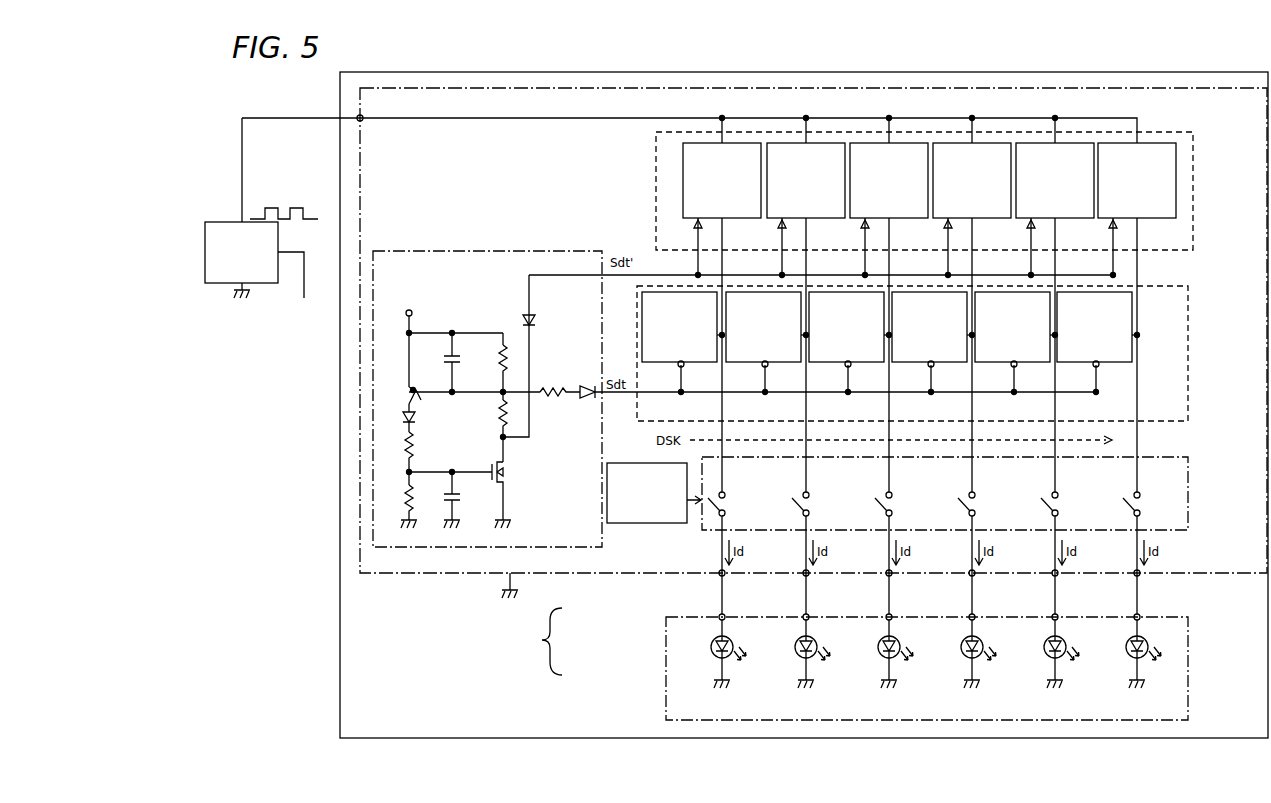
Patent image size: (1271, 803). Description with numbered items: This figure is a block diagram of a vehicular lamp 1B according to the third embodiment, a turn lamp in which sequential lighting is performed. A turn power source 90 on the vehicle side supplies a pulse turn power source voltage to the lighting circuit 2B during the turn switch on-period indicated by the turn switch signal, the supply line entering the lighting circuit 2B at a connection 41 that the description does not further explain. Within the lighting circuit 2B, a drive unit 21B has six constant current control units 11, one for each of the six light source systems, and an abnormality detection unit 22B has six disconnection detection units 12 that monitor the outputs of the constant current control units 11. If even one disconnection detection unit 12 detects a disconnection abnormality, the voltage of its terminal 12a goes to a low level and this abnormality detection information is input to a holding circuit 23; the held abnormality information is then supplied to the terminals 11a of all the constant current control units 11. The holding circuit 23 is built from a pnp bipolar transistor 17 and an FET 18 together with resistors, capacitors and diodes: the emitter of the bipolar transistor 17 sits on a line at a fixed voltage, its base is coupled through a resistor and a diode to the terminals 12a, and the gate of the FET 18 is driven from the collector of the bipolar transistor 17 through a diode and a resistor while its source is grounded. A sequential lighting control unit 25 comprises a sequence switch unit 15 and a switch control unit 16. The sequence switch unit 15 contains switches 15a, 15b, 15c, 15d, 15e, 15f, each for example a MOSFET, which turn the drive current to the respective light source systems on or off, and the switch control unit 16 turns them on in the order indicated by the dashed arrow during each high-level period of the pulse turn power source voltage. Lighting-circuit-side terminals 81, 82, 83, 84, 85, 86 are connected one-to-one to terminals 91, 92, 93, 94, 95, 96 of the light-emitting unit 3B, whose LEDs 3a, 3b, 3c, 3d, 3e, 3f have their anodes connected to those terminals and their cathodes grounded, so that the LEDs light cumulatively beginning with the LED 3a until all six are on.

The vehicular lamp 1B is at (1068, 72).
The lighting circuit 2B is at (932, 88).
The light-emitting unit 3B is at (666, 674).
The LED 3a is at (711, 647).
The LED 3b is at (795, 647).
The LED 3c is at (878, 647).
The LED 3d is at (961, 647).
The LED 3e is at (1044, 647).
The LED 3f is at (1126, 647).
The constant current control unit 11 is at (704, 143).
The terminal of constant current control unit 11a is at (696, 226).
The disconnection detection unit 12 is at (702, 362).
The terminal of disconnection detection unit 12a is at (679, 368).
The sequence switch unit 15 is at (702, 522).
The switch 15a is at (721, 509).
The switch 15b is at (805, 509).
The switch 15c is at (888, 509).
The switch 15d is at (971, 509).
The switch 15e is at (1054, 509).
The switch 15f is at (1136, 509).
The switch control unit 16 is at (627, 523).
The pnp bipolar transistor 17 is at (409, 388).
The MOSFET 18 is at (506, 471).
The drive unit 21B is at (656, 160).
The abnormality detection unit 22B is at (1188, 304).
The holding circuit 23 is at (487, 251).
The sequential lighting control unit 25 is at (541, 641).
The power supply line node 41 is at (362, 121).
The lighting-circuit-side terminal 81 is at (719, 572).
The lighting-circuit-side terminal 82 is at (803, 572).
The lighting-circuit-side terminal 83 is at (886, 572).
The lighting-circuit-side terminal 84 is at (969, 572).
The lighting-circuit-side terminal 85 is at (1052, 572).
The lighting-circuit-side terminal 86 is at (1134, 572).
The turn power source 90 is at (233, 222).
The light-emitting-unit-side terminal 91 is at (725, 615).
The light-emitting-unit-side terminal 92 is at (809, 615).
The light-emitting-unit-side terminal 93 is at (892, 615).
The light-emitting-unit-side terminal 94 is at (975, 615).
The light-emitting-unit-side terminal 95 is at (1058, 615).
The light-emitting-unit-side terminal 96 is at (1140, 615).